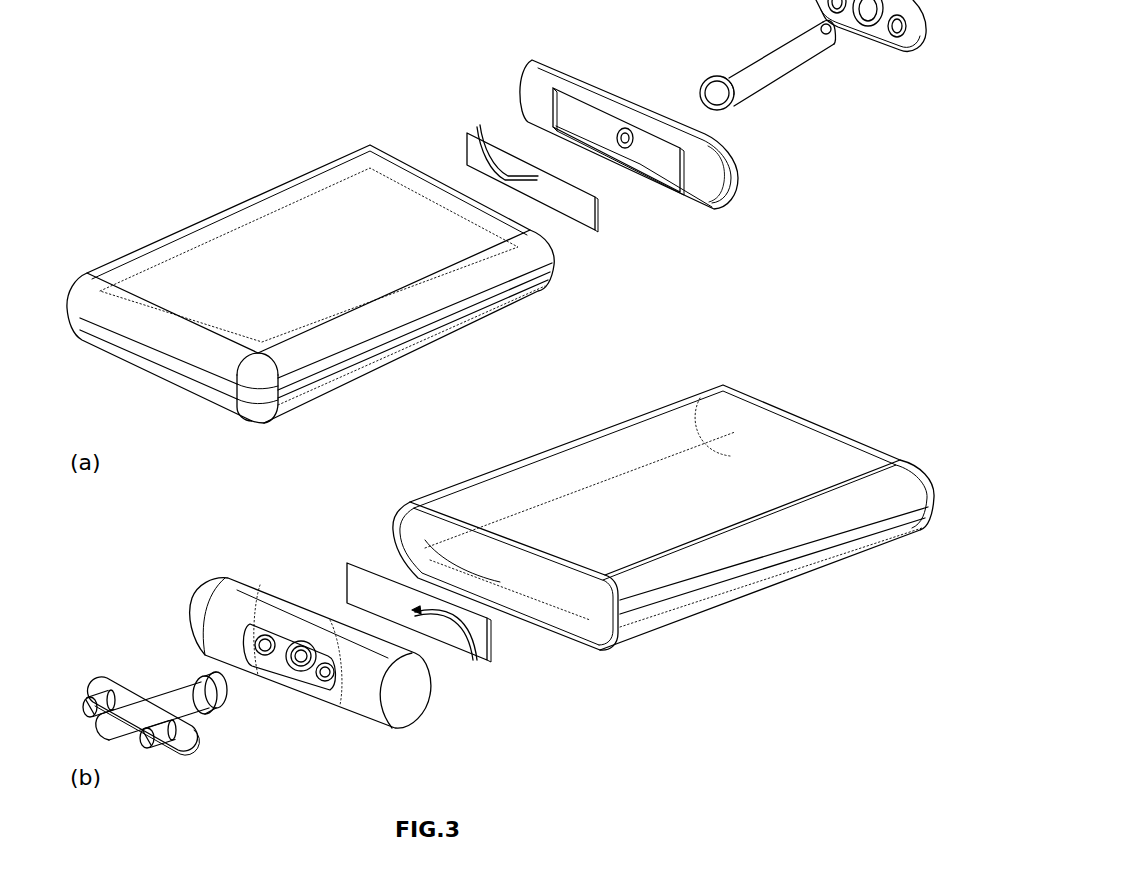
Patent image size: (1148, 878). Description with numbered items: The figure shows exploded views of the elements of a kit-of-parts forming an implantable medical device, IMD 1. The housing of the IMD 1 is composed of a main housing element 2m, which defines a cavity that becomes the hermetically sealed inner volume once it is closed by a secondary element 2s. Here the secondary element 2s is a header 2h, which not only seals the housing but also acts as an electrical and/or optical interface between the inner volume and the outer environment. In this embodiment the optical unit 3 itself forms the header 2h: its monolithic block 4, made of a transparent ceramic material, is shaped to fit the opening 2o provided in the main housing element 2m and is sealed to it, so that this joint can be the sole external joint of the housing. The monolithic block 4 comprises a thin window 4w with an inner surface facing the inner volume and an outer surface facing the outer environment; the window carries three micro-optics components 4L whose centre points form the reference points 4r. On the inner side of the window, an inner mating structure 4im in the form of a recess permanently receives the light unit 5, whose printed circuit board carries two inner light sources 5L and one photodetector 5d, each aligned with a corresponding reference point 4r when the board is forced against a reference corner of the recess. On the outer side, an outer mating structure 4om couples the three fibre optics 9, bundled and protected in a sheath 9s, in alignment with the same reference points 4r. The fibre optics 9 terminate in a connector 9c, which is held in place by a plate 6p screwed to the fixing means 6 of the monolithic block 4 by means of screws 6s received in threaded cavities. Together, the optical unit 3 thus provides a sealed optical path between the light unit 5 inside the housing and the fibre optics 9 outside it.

The IMD 1 is at (203, 168).
The main housing element 2m is at (427, 345).
The opening 2o is at (400, 512).
The optical unit 3 is at (495, 406).
The secondary element 2s is at (495, 406).
The header 2h is at (745, 221).
The monolithic block 4 is at (739, 160).
The inner mating structure 4im is at (578, 117).
The thin window 4w is at (617, 136).
The micro-optics components 4L is at (590, 204).
The reference points 4r is at (590, 204).
The outer mating structure 4om is at (291, 660).
The fixing means 6 is at (334, 695).
The light unit 5 is at (362, 597).
The photodetector 5d is at (477, 133).
The inner light source 5L is at (497, 160).
The fibre optic 9 is at (710, 95).
The connector 9c is at (733, 78).
The sheath 9s is at (805, 68).
The plate 6p is at (880, 38).
The screws 6s is at (153, 748).